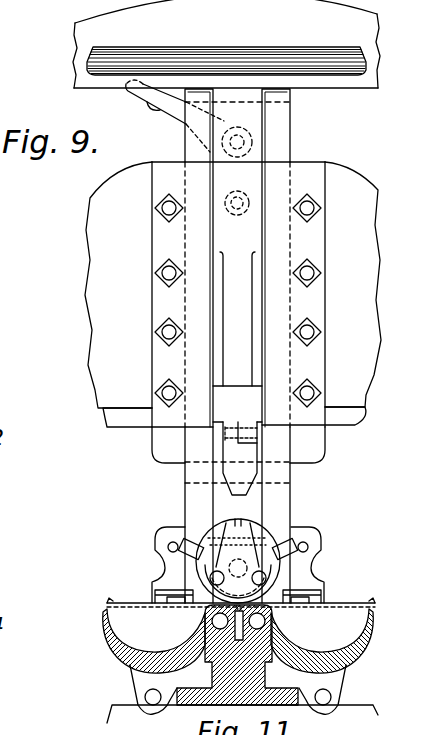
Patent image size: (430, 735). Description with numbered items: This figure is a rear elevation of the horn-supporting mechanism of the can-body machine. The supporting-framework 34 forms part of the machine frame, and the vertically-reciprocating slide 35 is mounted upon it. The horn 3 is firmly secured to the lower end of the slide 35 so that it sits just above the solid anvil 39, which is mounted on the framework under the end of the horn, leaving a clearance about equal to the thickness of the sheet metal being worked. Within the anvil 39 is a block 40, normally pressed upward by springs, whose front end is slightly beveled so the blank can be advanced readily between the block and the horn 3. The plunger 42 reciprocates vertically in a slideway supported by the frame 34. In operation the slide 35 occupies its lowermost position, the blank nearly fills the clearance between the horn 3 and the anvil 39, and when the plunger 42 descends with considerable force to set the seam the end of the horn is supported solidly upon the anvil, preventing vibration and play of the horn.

The horn 3 is at (238, 537).
The supporting-framework 34 is at (167, 162).
The vertically-reciprocating slide 35 is at (290, 137).
The solid anvil 39 is at (205, 613).
The block 40 is at (266, 612).
The plunger 42 is at (237, 470).